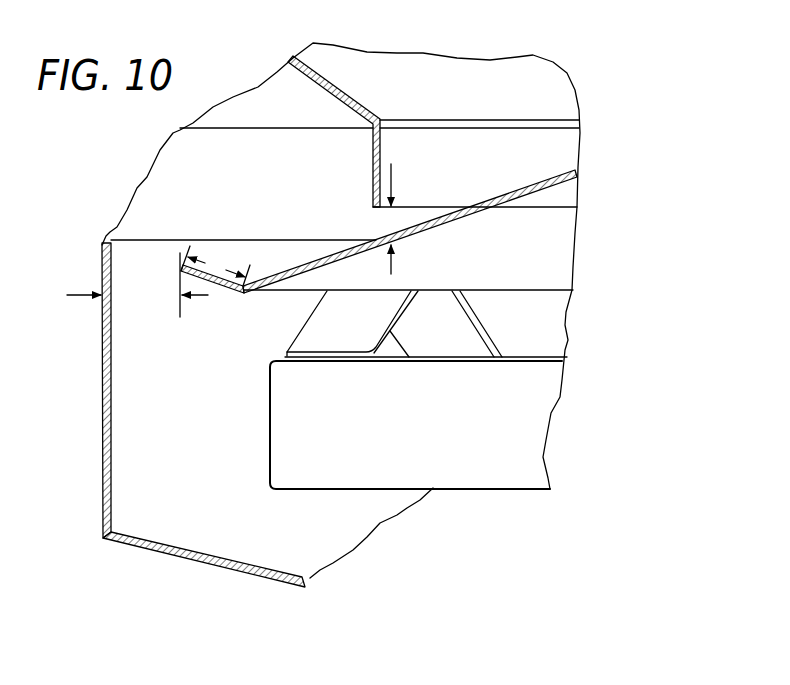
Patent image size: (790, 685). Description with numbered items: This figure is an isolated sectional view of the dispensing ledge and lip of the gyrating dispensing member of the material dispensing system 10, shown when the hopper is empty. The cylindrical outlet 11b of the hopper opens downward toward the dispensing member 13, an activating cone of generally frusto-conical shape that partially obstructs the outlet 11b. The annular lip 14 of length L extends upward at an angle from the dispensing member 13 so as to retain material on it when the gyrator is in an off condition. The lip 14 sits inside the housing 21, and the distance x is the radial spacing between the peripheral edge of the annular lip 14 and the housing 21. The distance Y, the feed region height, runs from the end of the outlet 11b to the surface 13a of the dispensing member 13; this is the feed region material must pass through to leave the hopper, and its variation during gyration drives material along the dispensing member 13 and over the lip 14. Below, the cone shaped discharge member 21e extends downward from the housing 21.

The system 10 is at (389, 31).
The outlet 11b is at (372, 167).
The dispensing member 13 is at (457, 220).
The surface of dispensing member 13a is at (302, 265).
The annular lip 14 is at (213, 283).
The housing 21 is at (100, 392).
The cone shaped discharge member 21e is at (203, 563).